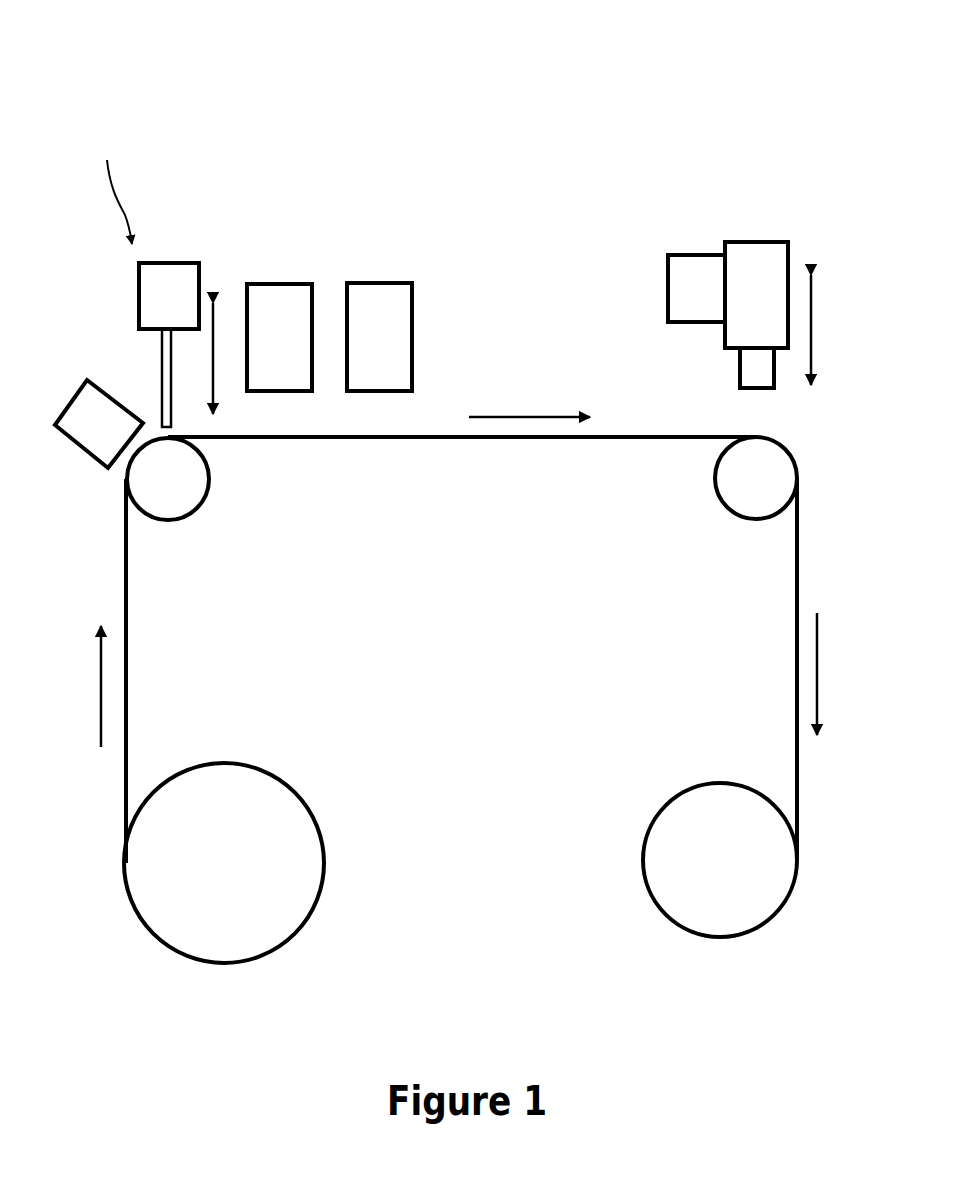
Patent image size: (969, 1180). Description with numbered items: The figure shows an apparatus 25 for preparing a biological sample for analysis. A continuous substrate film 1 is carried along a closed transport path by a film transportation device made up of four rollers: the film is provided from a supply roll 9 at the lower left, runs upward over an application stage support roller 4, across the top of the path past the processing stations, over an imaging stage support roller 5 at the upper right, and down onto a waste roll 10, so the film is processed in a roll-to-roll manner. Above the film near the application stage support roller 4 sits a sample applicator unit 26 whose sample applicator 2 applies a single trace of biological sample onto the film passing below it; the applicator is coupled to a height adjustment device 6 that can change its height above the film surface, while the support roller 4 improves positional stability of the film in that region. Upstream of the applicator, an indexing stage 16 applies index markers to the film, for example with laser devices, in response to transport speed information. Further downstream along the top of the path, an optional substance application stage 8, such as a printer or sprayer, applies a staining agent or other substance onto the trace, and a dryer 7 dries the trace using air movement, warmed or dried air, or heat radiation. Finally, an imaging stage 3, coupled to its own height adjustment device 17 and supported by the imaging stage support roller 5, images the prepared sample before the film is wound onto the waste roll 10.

The continuous substrate film 1 is at (398, 468).
The sample applicator 2 is at (142, 388).
The imaging stage 3 is at (758, 312).
The application stage support roller 4 is at (161, 472).
The imaging stage support roller 5 is at (752, 487).
The height adjustment device 6 is at (160, 285).
The dryer 7 is at (385, 328).
The substance application stage 8 is at (279, 333).
The supply roll 9 is at (225, 866).
The waste roll 10 is at (715, 867).
The indexing stage 16 is at (100, 433).
The height adjustment device 17 is at (691, 285).
The apparatus 25 is at (187, 213).
The sample applicator unit 26 is at (107, 180).